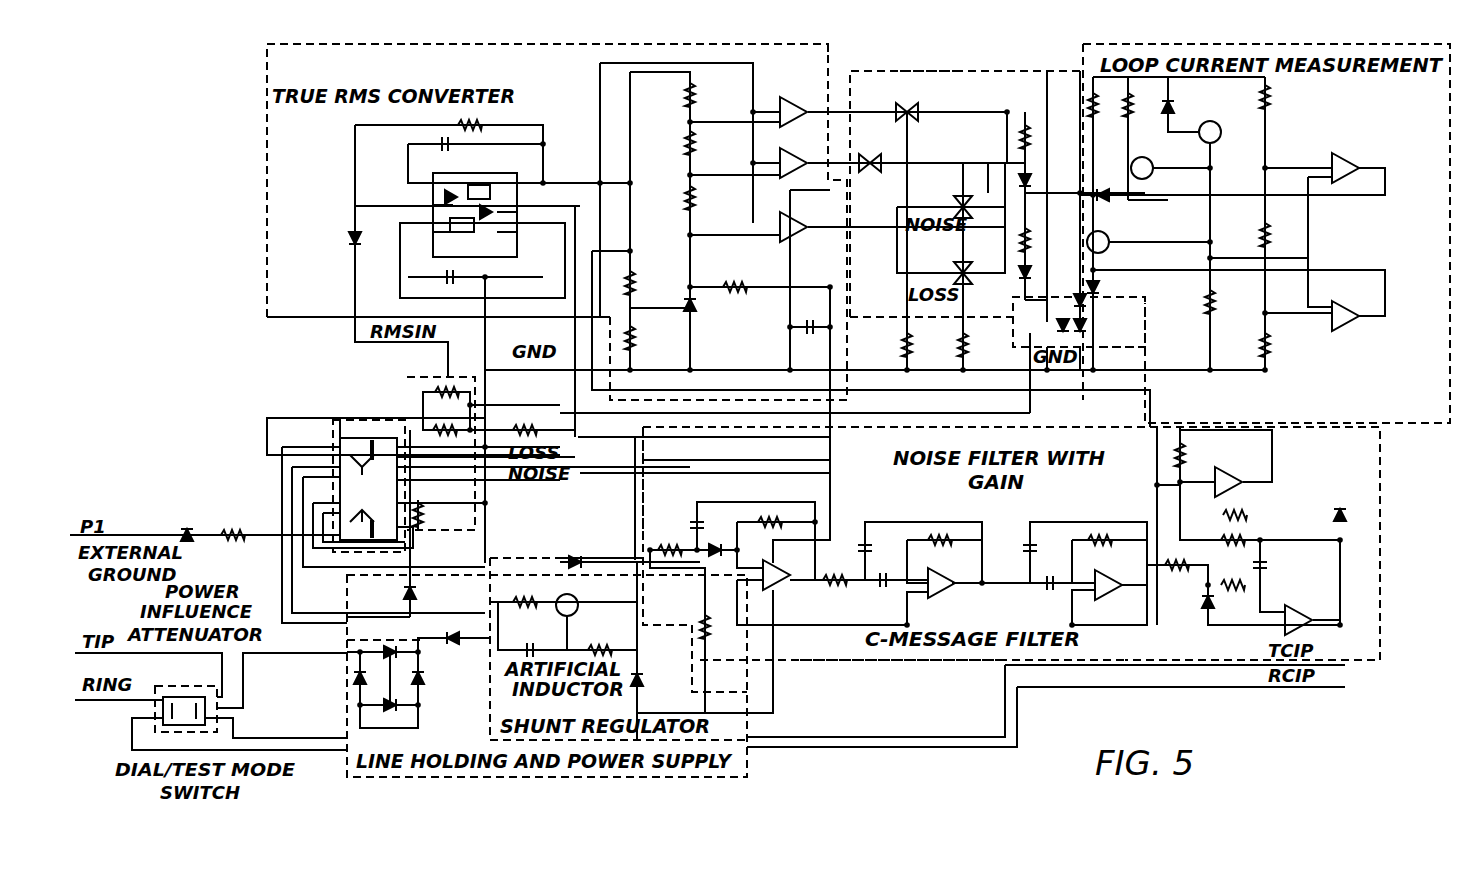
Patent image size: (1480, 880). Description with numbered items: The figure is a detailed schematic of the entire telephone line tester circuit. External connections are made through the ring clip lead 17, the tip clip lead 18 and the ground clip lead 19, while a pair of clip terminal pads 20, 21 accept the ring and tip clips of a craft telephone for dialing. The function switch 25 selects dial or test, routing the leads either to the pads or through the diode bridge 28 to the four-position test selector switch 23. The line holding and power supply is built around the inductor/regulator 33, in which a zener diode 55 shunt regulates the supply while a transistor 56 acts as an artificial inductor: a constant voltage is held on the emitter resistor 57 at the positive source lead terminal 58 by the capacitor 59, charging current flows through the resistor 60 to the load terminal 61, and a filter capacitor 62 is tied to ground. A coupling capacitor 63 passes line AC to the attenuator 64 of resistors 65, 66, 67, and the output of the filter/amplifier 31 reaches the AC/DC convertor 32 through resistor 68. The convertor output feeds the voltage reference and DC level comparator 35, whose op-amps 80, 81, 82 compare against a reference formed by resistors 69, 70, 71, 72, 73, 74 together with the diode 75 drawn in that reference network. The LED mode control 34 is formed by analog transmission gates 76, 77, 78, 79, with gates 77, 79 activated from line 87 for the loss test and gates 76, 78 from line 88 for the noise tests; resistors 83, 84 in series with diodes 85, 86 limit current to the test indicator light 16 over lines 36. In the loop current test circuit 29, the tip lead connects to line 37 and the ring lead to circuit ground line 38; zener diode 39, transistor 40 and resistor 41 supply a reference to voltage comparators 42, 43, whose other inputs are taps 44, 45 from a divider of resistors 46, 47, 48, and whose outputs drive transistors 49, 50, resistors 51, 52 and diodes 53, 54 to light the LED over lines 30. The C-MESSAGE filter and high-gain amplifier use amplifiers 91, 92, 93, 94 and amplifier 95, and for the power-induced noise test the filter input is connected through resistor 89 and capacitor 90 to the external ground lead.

The test indicator light 16 is at (1122, 348).
The ring clip lead 17 is at (125, 702).
The tip clip lead 18 is at (122, 650).
The ground clip lead 19 is at (152, 533).
The ring clip terminal pad 20 is at (1240, 663).
The tip clip terminal pad 21 is at (1245, 690).
The test selector switch 23 is at (378, 418).
The function switch 25 is at (200, 685).
The diode bridge 28 is at (347, 665).
The loop current test circuit 29 is at (1095, 44).
The lines 30 is at (1085, 314).
The filter/amplifier 31 is at (905, 662).
The AC/DC convertor 32 is at (315, 320).
The inductor/regulator 33 is at (600, 555).
The LED mode control 34 is at (950, 70).
The voltage reference and DC level comparator 35 is at (832, 44).
The lines 36 is at (1025, 295).
The line 37 is at (267, 430).
The circuit ground line 38 is at (485, 545).
The zener diode 39 is at (1171, 104).
The transistor 40 is at (1220, 122).
The resistor 41 is at (1214, 300).
The voltage comparator 42 is at (1345, 153).
The voltage comparator 43 is at (1345, 324).
The tap 44 is at (1267, 165).
The tap 45 is at (1267, 312).
The resistor 46 is at (1270, 100).
The resistor 47 is at (1262, 232).
The resistor 48 is at (1268, 345).
The transistor 49 is at (1106, 247).
The transistor 50 is at (1200, 136).
The resistor 51 is at (1096, 115).
The resistor 52 is at (1130, 112).
The diode 53 is at (1098, 288).
The diode 54 is at (1131, 171).
The zener diode 55 is at (642, 678).
The transistor 56 is at (578, 598).
The emitter resistor 57 is at (525, 600).
The positive source lead terminal 58 is at (355, 615).
The capacitor 59 is at (528, 648).
The resistor 60 is at (598, 648).
The load terminal 61 is at (640, 535).
The filter capacitor 62 is at (572, 564).
The coupling capacitor 63 is at (418, 595).
The attenuator 64 is at (428, 380).
The resistor 65 is at (420, 505).
The resistor 66 is at (450, 428).
The resistor 67 is at (455, 392).
The resistor 68 is at (528, 428).
The resistor 69 is at (688, 95).
The resistor 70 is at (633, 278).
The resistor 71 is at (633, 336).
The resistor 72 is at (737, 283).
The resistor 73 is at (688, 198).
The resistor 74 is at (688, 143).
The diode 75 is at (695, 306).
The analog transmission gate 76 is at (906, 102).
The analog transmission gate 77 is at (870, 152).
The analog transmission gate 78 is at (952, 197).
The analog transmission gate 79 is at (972, 265).
The op-amp 80 is at (790, 100).
The op-amp 81 is at (793, 150).
The op-amp 82 is at (796, 215).
The resistor 83 is at (1028, 127).
The resistor 84 is at (1028, 240).
The diode 85 is at (1030, 175).
The diode 86 is at (1028, 272).
The line 87 is at (710, 450).
The line 88 is at (706, 474).
The resistor 89 is at (233, 532).
The capacitor 90 is at (188, 532).
The amplifier 91 is at (785, 582).
The amplifier 92 is at (946, 588).
The amplifier 93 is at (1110, 592).
The amplifier 94 is at (1292, 608).
The amplifier 95 is at (1225, 472).